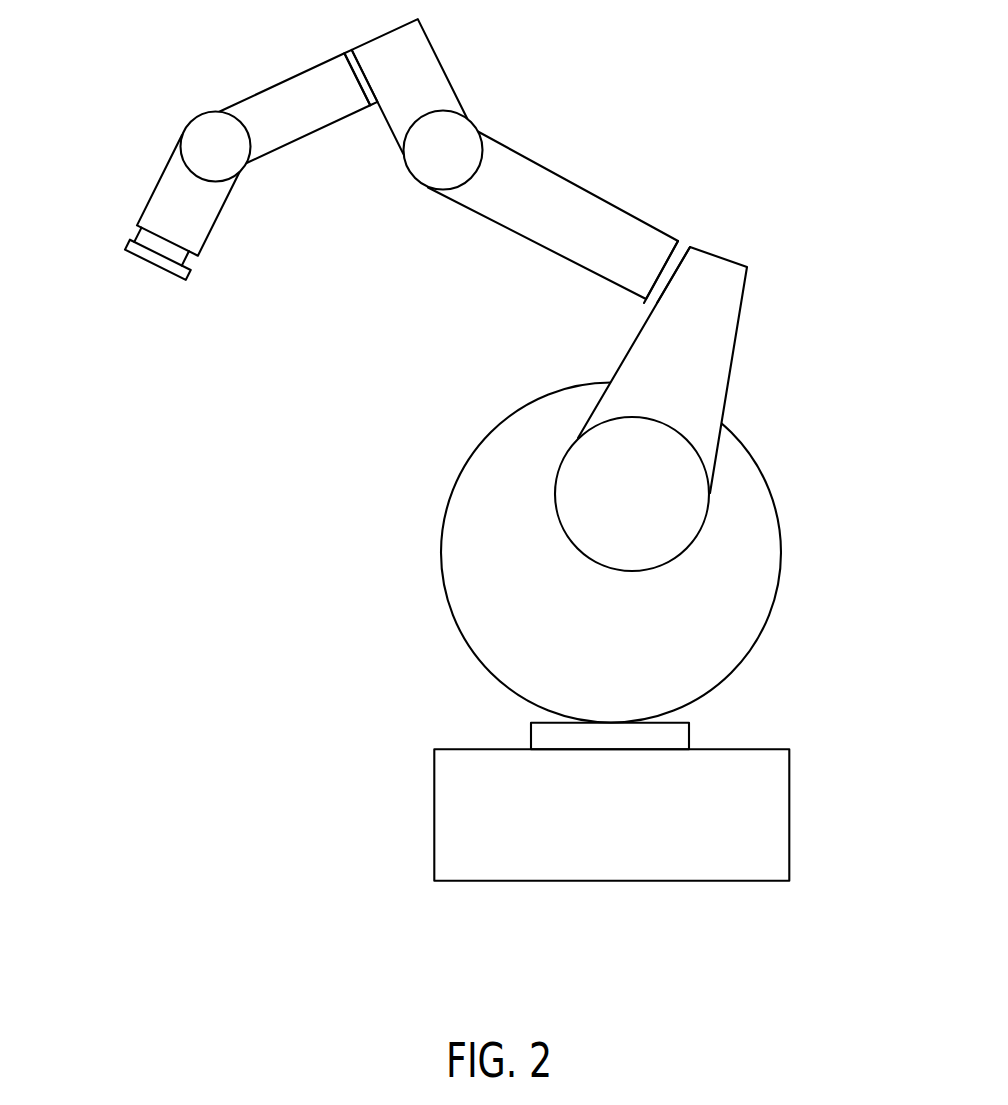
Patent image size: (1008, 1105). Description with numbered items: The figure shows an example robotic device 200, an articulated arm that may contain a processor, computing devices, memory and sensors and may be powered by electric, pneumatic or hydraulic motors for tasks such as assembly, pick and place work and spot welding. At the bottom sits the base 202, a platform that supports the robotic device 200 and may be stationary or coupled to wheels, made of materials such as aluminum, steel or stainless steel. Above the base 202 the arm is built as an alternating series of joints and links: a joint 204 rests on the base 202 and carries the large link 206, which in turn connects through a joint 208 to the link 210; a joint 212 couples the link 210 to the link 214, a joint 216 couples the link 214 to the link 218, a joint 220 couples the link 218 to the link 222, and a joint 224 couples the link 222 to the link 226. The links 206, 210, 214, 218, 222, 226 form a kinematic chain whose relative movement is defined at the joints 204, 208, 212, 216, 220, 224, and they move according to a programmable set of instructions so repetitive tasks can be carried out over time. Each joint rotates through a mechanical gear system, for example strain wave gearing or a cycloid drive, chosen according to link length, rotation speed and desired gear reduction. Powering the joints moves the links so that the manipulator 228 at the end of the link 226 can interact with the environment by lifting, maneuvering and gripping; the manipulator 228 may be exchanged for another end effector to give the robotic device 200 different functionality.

The robotic device 200 is at (809, 51).
The base 202 is at (767, 820).
The joint 204 is at (540, 734).
The link 206 is at (752, 595).
The joint 208 is at (570, 523).
The link 210 is at (723, 372).
The joint 212 is at (648, 300).
The link 214 is at (548, 178).
The joint 216 is at (425, 180).
The link 218 is at (424, 65).
The joint 220 is at (344, 53).
The link 222 is at (278, 100).
The joint 224 is at (195, 127).
The link 226 is at (152, 198).
The manipulator 228 is at (135, 253).